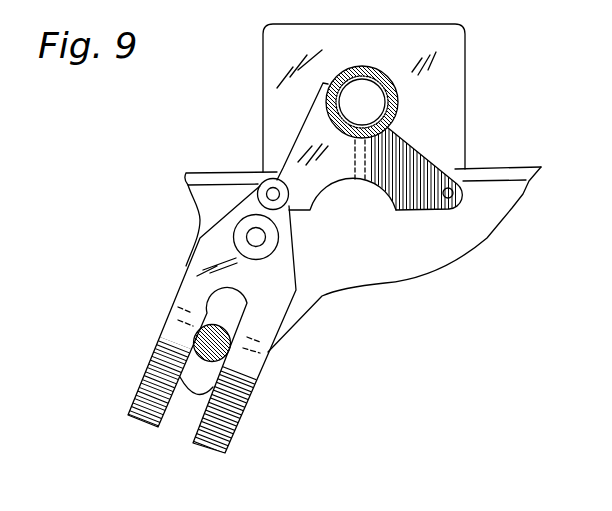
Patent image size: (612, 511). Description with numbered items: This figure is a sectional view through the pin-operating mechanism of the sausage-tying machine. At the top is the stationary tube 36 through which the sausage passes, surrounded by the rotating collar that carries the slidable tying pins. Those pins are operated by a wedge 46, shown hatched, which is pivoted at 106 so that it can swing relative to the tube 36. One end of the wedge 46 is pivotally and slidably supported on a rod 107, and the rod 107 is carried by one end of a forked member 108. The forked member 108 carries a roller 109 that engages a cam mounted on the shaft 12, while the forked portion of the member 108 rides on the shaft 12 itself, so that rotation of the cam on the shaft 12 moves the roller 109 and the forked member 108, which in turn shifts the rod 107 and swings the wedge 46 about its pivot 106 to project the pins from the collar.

The shaft 12 is at (193, 338).
The stationary tube 36 is at (373, 86).
The wedge 46 is at (415, 154).
The pivot 106 is at (478, 170).
The rod 107 is at (265, 182).
The forked member 108 is at (288, 247).
The roller 109 is at (239, 232).